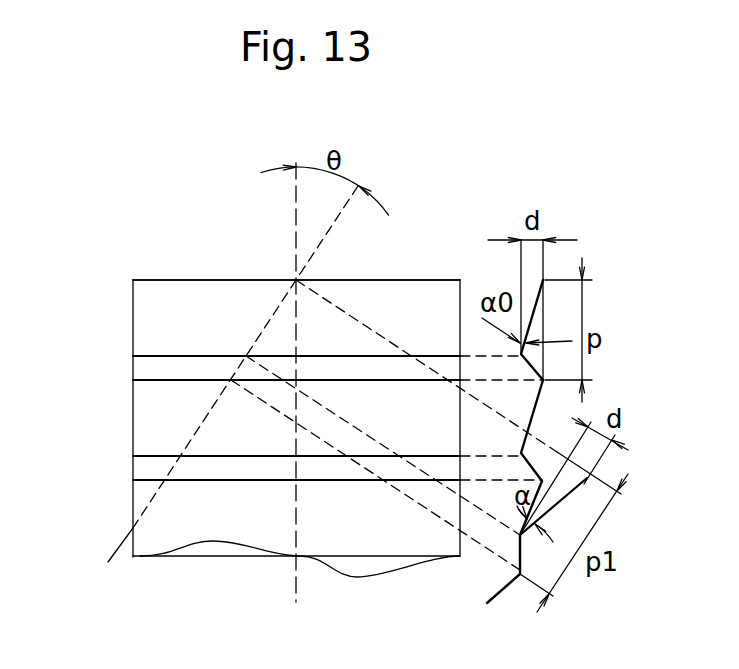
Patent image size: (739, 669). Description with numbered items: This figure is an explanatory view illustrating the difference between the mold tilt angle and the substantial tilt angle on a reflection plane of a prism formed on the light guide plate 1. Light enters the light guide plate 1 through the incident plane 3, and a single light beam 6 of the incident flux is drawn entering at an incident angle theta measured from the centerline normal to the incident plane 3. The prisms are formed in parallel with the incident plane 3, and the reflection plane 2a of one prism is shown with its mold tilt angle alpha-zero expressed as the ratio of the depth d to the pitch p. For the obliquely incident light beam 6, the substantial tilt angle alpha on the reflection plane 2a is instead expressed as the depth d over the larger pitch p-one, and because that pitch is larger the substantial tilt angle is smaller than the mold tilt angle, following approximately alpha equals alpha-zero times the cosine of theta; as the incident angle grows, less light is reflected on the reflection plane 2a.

The light guide plate 1 is at (160, 257).
The reflection plane 2a is at (133, 332).
The incident plane 3 is at (415, 280).
The light beam 6 is at (113, 548).